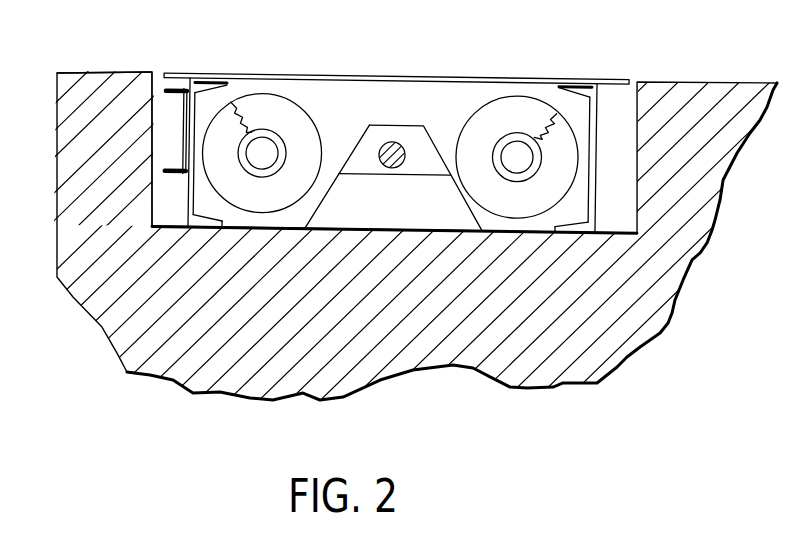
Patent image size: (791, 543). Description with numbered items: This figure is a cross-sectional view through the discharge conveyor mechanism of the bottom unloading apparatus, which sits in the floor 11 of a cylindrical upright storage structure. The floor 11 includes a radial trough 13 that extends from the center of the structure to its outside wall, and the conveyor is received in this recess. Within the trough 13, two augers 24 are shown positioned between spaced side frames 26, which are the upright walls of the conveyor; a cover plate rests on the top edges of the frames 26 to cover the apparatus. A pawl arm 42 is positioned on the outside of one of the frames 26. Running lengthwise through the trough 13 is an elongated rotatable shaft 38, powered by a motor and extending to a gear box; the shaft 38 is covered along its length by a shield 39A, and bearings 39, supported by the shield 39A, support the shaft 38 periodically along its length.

The floor 11 is at (708, 84).
The radial trough 13 is at (154, 73).
The augers 24 is at (293, 100).
The side frames 26 is at (150, 214).
The elongated rotatable shaft 38 is at (396, 139).
The bearings 39 is at (425, 122).
The shield 39A is at (368, 122).
The pawl arm 42 is at (178, 88).